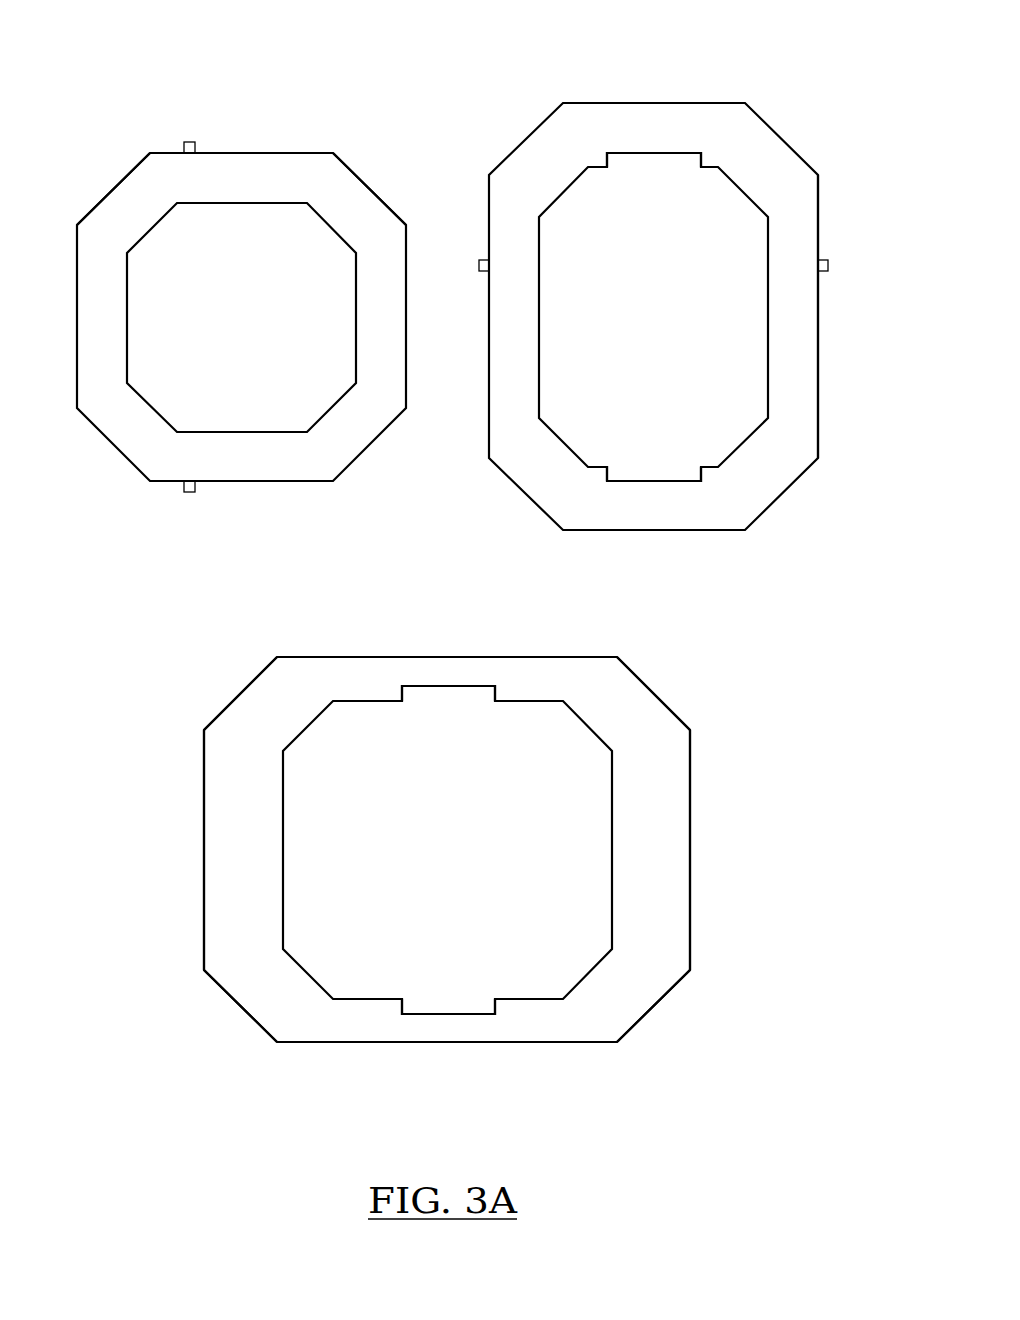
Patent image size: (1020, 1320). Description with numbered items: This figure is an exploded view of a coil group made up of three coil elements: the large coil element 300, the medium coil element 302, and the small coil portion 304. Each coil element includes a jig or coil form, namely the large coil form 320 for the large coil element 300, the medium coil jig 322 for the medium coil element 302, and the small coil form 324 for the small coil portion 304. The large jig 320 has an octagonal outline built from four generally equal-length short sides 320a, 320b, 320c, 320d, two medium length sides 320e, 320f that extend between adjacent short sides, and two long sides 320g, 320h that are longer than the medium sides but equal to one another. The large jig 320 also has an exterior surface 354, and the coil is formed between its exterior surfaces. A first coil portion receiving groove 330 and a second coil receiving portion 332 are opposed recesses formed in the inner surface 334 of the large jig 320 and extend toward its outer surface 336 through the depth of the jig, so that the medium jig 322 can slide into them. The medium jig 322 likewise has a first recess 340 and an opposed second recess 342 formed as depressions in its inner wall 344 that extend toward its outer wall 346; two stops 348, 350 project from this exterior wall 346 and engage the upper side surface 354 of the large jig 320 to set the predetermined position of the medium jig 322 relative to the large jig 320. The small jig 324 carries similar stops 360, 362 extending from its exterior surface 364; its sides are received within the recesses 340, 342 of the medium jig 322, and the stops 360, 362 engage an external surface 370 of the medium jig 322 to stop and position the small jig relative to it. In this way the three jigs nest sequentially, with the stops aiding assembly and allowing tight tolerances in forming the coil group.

The large coil element 300 is at (450, 851).
The medium coil element 302 is at (538, 110).
The small coil portion 304 is at (260, 141).
The large coil form 320 is at (655, 895).
The short side 320a is at (228, 995).
The short side 320b is at (665, 995).
The short side 320c is at (670, 705).
The short side 320d is at (225, 705).
The medium length side 320e is at (204, 858).
The medium length side 320f is at (690, 768).
The long side 320g is at (430, 1042).
The long side 320h is at (457, 657).
The medium coil jig 322 is at (598, 132).
The small coil form 324 is at (313, 170).
The first coil portion receiving groove 330 is at (467, 686).
The second coil receiving portion 332 is at (452, 1014).
The inner surface 334 is at (357, 701).
The outer surface 336 is at (315, 657).
The first recess 340 is at (667, 153).
The second recess 342 is at (665, 481).
The inner wall 344 is at (598, 465).
The outer wall 346 is at (710, 530).
The stop 348 is at (828, 265).
The stop 350 is at (479, 265).
The exterior surface 354 is at (552, 1025).
The stop 360 is at (187, 141).
The stop 362 is at (188, 493).
The exterior surface 364 is at (115, 187).
The external surface 370 is at (802, 353).